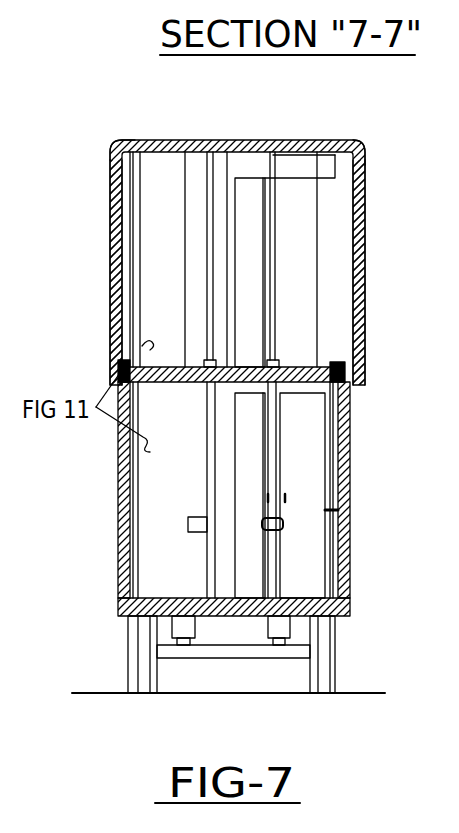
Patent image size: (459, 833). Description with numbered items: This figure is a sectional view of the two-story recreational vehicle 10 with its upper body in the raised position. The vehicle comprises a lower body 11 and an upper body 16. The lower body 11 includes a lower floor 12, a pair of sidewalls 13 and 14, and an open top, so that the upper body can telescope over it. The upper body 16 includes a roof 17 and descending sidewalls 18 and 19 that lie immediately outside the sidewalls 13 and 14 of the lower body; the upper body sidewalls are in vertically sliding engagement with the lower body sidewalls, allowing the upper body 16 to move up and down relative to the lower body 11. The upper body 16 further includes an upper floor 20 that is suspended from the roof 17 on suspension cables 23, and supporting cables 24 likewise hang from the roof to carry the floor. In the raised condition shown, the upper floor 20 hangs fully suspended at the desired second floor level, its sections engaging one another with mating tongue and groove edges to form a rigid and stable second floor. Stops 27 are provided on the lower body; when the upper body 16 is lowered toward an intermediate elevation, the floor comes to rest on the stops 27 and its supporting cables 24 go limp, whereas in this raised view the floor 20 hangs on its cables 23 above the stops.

The two-story recreational vehicle 10 is at (358, 133).
The lower body 11 is at (118, 602).
The lower floor 12 is at (150, 598).
The sidewall 13 is at (118, 468).
The sidewall 14 is at (352, 463).
The upper body 16 is at (123, 140).
The roof 17 is at (217, 142).
The descending sidewall 18 is at (110, 245).
The descending sidewall 19 is at (363, 238).
The upper floor 20 is at (200, 383).
The suspension cables 23 is at (185, 258).
The supporting cables 24 is at (185, 290).
The stops 27 is at (326, 515).